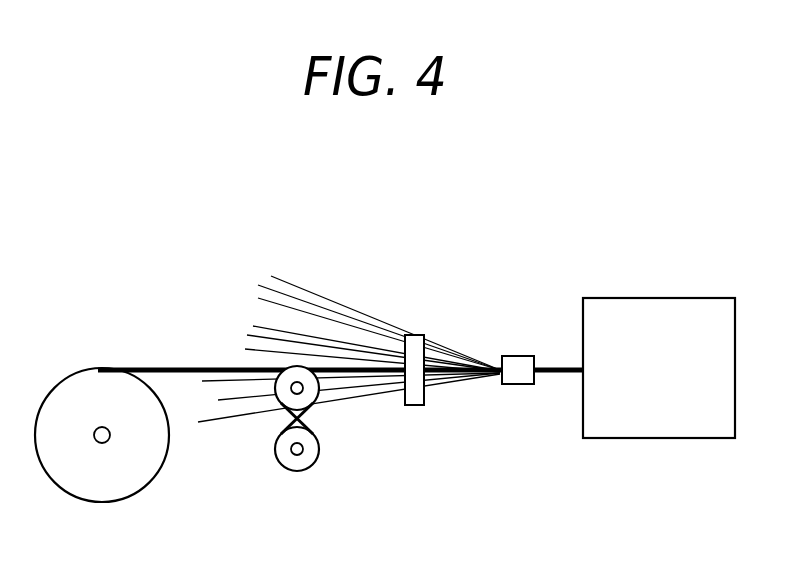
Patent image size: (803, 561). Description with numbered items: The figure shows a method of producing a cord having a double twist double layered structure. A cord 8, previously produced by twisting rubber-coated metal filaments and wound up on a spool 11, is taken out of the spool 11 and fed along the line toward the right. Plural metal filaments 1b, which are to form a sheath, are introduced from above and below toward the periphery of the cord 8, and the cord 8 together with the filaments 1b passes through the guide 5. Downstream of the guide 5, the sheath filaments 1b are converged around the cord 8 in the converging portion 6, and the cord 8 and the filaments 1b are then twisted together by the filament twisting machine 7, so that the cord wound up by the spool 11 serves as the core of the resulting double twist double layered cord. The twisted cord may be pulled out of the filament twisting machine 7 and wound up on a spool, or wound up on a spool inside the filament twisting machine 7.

The spool 11 is at (99, 390).
The cord 8 is at (195, 367).
The filaments 1b is at (293, 310).
The guide 5 is at (418, 335).
The converging portion 6 is at (510, 356).
The filament twisting machine 7 is at (645, 298).